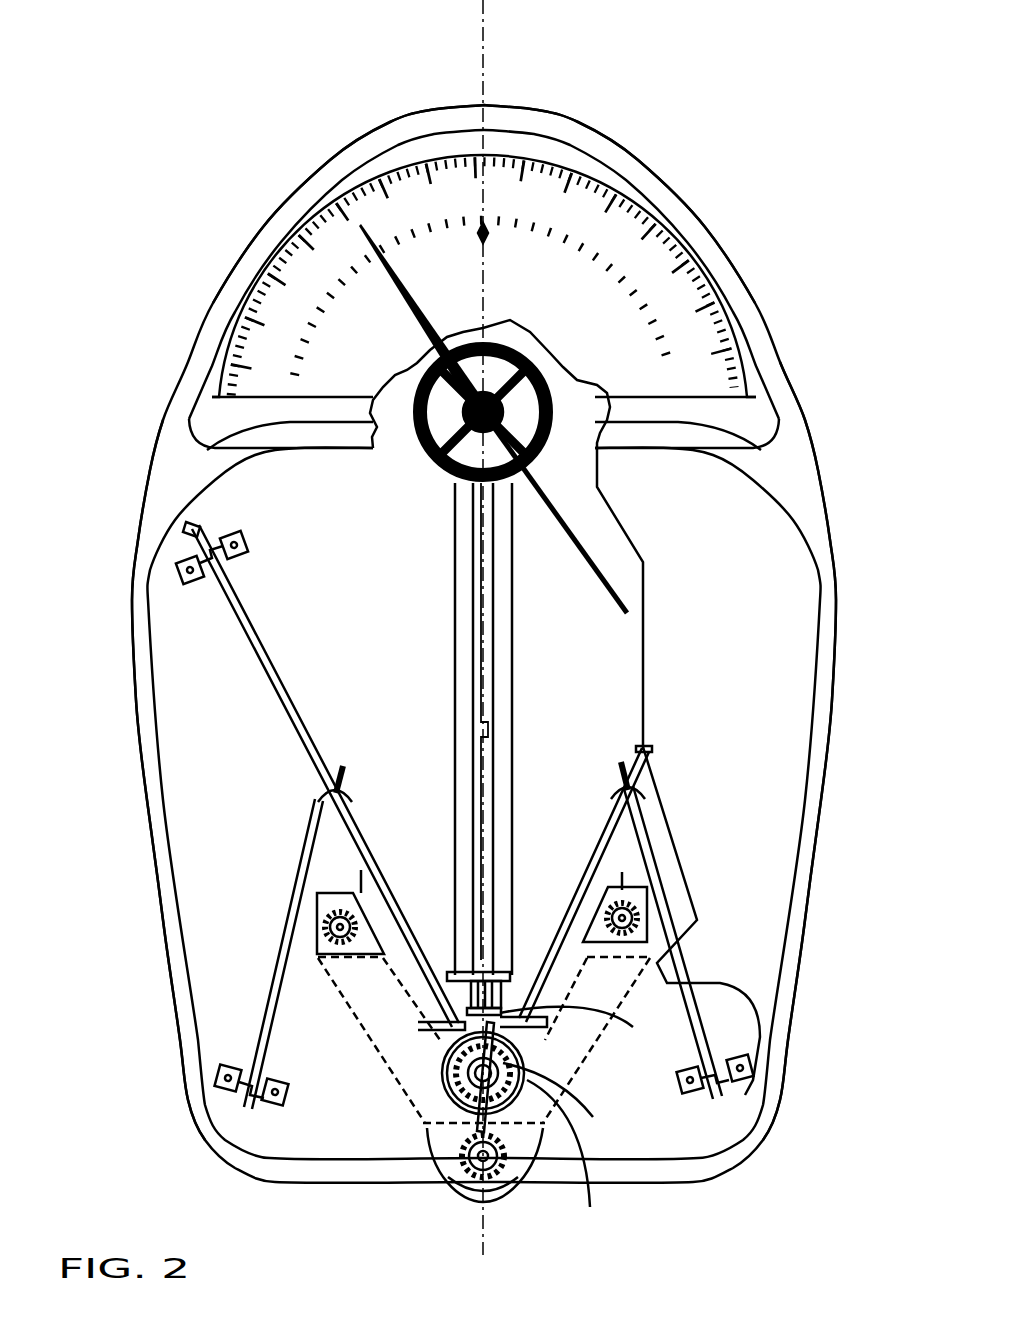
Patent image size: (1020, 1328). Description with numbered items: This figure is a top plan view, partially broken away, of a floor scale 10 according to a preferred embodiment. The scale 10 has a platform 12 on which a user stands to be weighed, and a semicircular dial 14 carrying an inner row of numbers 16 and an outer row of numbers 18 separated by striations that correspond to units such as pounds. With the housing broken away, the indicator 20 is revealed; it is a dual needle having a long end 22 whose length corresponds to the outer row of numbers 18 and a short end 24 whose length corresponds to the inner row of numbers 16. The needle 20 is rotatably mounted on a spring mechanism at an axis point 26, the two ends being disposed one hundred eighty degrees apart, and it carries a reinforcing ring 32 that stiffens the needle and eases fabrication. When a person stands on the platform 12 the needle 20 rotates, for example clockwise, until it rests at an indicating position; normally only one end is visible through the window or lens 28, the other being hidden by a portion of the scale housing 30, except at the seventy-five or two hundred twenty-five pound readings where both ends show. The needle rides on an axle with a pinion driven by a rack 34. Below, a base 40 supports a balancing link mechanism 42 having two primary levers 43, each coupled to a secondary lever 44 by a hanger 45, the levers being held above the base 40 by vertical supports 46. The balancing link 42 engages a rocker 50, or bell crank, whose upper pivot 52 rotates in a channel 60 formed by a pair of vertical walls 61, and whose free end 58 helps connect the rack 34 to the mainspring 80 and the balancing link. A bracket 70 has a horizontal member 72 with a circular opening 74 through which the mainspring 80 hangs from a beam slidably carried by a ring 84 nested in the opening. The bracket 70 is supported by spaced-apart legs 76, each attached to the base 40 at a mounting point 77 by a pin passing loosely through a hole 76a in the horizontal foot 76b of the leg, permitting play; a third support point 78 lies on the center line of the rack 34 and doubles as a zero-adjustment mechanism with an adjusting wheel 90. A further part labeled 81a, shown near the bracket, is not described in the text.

The floor scale 10 is at (262, 192).
The platform 12 is at (768, 703).
The dial 14 is at (577, 207).
The inner row of numbers 16 is at (303, 343).
The outer row of numbers 18 is at (258, 300).
The indicator 20 is at (352, 392).
The long end 22 is at (380, 247).
The short end 24 is at (593, 570).
The axis point 26 is at (433, 427).
The window or lens 28 is at (537, 147).
The scale housing 30 is at (788, 455).
The reinforcing ring 32 is at (597, 465).
The rack 34 is at (495, 572).
The base 40 is at (252, 808).
The balancing link mechanism 42 is at (262, 705).
The primary levers 43 is at (292, 697).
The secondary lever 44 is at (318, 915).
The hanger 45 is at (345, 793).
The vertical supports 46 is at (252, 545).
The rocker 50 is at (495, 967).
The upper pivot 52 is at (452, 967).
The free end 58 is at (582, 1024).
The channel 60 is at (512, 690).
The vertical walls 61 is at (513, 650).
The bracket 70 is at (373, 1075).
The horizontal member 72 is at (430, 1068).
The opening 74 is at (510, 1058).
The legs 76 is at (320, 950).
The hole 76a is at (330, 927).
The foot 76b is at (375, 905).
The mounting point 77 is at (485, 869).
The support point 78 is at (477, 1197).
The mainspring 80 is at (566, 1097).
The link pin 81a is at (437, 1137).
The ring 84 is at (578, 1148).
The adjusting wheel 90 is at (500, 1197).